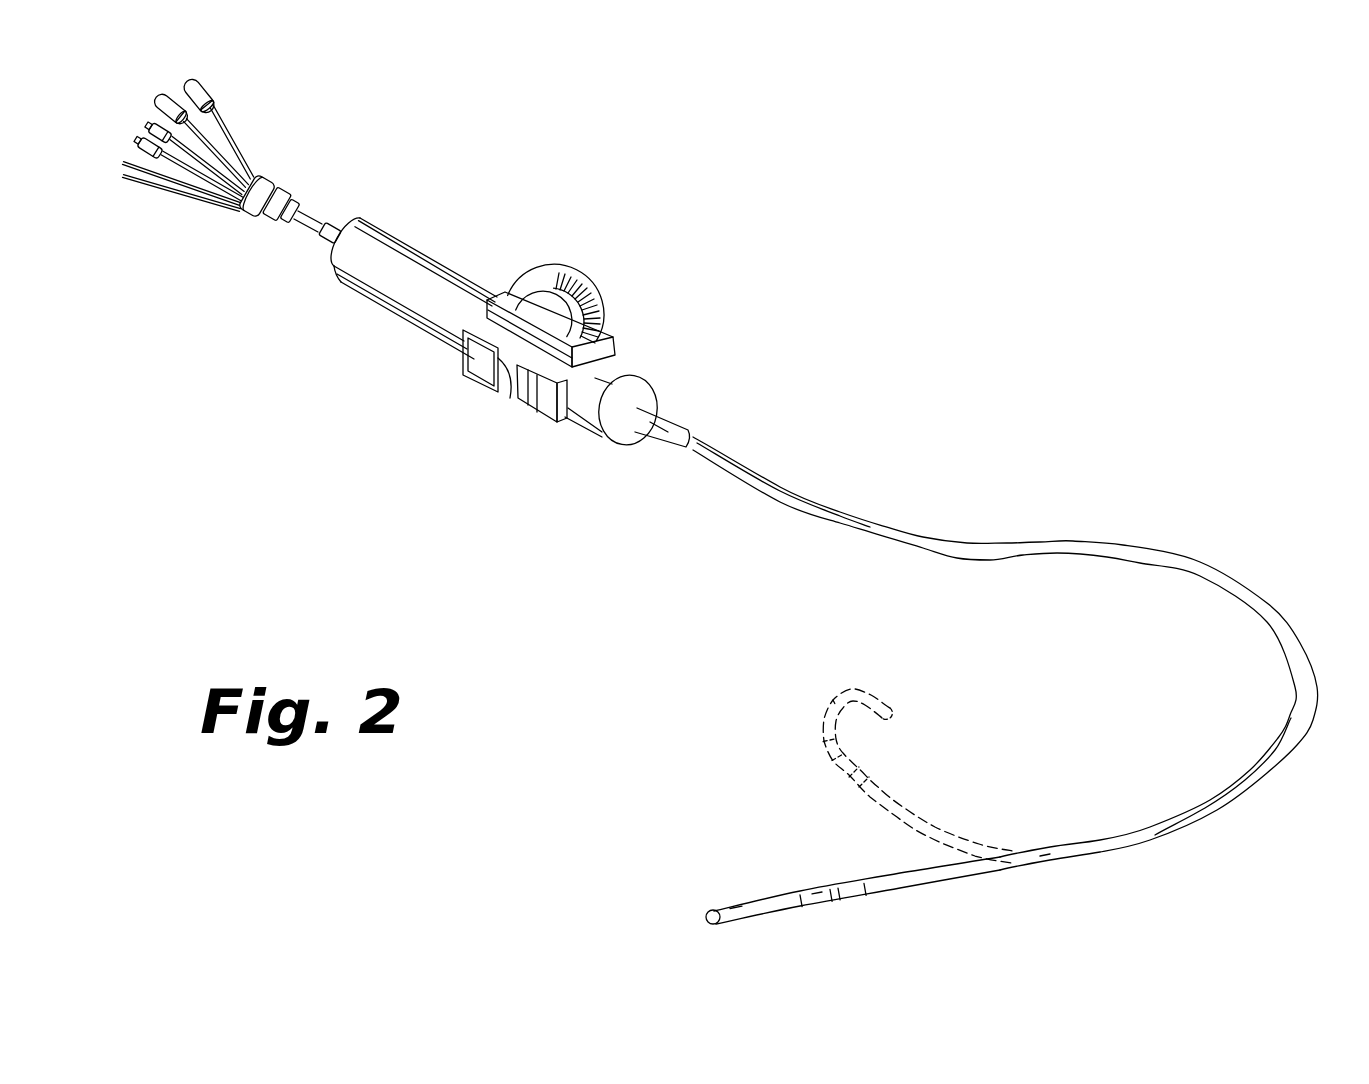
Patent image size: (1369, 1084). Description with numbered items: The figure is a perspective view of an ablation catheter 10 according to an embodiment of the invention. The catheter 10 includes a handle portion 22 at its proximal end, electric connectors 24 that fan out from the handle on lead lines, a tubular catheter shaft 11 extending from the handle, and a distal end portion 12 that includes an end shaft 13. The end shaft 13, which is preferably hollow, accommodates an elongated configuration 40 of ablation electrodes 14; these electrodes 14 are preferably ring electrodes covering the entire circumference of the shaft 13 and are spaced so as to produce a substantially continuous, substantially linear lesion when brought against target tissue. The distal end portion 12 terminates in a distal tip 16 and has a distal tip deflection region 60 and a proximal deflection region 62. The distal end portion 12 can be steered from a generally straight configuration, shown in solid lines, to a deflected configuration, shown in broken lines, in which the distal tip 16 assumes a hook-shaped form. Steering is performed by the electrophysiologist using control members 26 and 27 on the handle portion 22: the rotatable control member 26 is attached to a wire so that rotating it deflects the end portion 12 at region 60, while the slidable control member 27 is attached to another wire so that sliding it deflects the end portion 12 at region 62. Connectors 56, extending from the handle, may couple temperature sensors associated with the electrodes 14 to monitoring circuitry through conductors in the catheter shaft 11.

The ablation catheter 10 is at (763, 254).
The tubular catheter shaft 11 is at (855, 522).
The distal end portion 12 is at (755, 836).
The end shaft 13 is at (934, 830).
The ablation electrodes 14 is at (877, 767).
The distal tip 16 is at (912, 706).
The handle portion 22 is at (398, 304).
The electric connectors 24 is at (244, 112).
The control member 26 is at (552, 276).
The control member 27 is at (530, 404).
The elongated configuration 40 is at (821, 882).
The connectors 56 is at (179, 190).
The distal tip deflection region 60 is at (803, 676).
The proximal deflection region 62 is at (1047, 868).